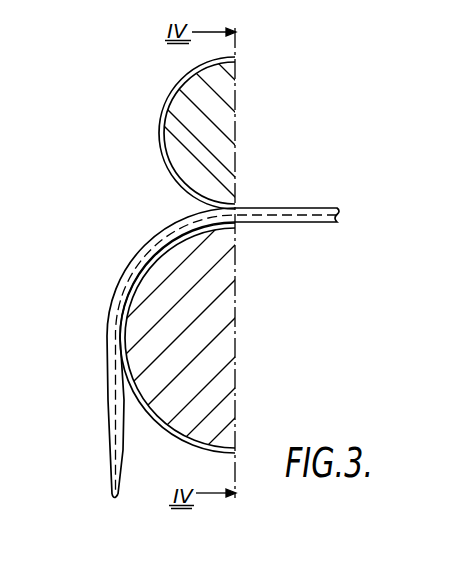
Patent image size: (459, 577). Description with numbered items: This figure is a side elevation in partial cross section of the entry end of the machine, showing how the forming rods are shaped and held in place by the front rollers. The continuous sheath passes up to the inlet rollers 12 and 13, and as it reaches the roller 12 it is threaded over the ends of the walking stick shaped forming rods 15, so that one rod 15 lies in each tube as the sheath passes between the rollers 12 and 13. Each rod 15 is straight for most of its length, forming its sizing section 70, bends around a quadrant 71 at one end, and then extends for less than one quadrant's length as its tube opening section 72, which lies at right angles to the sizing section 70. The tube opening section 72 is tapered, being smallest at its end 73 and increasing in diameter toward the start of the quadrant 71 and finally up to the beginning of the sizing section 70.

The inlet roller 12 is at (176, 398).
The inlet roller 13 is at (180, 145).
The forming rod 15 is at (110, 294).
The sizing section 70 is at (288, 208).
The quadrant 71 is at (149, 247).
The tube opening section 72 is at (108, 453).
The end 73 is at (113, 500).